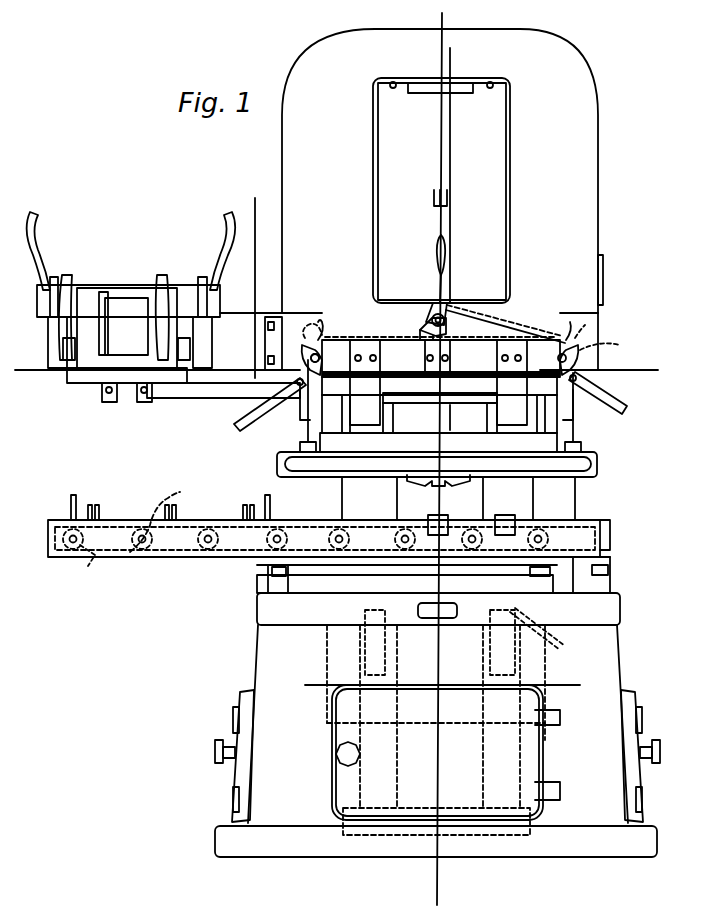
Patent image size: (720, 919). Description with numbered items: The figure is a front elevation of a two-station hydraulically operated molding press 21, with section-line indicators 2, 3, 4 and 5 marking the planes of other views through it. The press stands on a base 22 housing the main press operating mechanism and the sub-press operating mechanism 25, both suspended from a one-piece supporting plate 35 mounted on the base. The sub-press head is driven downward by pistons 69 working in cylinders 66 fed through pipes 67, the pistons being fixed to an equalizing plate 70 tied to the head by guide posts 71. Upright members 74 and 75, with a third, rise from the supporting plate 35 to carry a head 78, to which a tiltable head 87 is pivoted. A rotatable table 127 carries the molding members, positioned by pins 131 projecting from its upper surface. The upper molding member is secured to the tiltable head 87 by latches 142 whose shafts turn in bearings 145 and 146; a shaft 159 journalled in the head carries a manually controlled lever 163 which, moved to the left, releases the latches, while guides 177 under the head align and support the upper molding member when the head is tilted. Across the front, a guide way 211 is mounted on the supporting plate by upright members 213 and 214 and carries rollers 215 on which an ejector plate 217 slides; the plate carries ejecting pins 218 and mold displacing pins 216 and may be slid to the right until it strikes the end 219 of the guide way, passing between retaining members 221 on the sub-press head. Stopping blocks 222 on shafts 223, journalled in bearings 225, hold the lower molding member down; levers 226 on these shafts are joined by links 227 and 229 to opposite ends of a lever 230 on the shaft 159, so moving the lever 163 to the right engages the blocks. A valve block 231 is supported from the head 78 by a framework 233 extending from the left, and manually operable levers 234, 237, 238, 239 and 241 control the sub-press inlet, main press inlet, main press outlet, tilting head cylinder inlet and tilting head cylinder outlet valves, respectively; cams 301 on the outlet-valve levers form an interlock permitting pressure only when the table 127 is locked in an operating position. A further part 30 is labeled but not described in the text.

The section line 2- 2 is at (434, 15).
The section line 3- 3 is at (238, 202).
The section line 4- 4 is at (23, 356).
The section line 5- 5 is at (472, 58).
The two-station hydraulic molding press 21 is at (293, 68).
The base 22 is at (620, 670).
The sub-press operating mechanism 25 is at (318, 660).
The latch bracket 30 is at (434, 193).
The supporting plate 35 is at (613, 608).
The cylinders 66 is at (365, 640).
The pipes 67 is at (560, 648).
The pistons 69 is at (370, 737).
The equalizing plate 70 is at (455, 835).
The guide posts 71 is at (363, 783).
The upright member 74 is at (295, 425).
The upright member 75 is at (578, 420).
The head 78 is at (620, 345).
The tiltable head 87 is at (485, 175).
The table 127 is at (598, 470).
The pins 131 is at (314, 416).
The latches 142 is at (367, 440).
The bearings 145 is at (340, 348).
The bearings 146 is at (398, 350).
The shaft 159 is at (448, 312).
The manually controlled lever 163 is at (447, 252).
The guides 177 is at (280, 397).
The guide way 211 is at (157, 553).
The upright member 213 is at (265, 582).
The upright member 214 is at (605, 580).
The rollers 215 is at (105, 564).
The mold displacing pins 216 is at (78, 497).
The ejector plate 217 is at (174, 510).
The ejecting pins 218 is at (92, 505).
The end 219 is at (605, 525).
The retaining members 221 is at (435, 518).
The stopping blocks 222 is at (245, 423).
The shafts 223 is at (312, 372).
The bearings 225 is at (318, 322).
The levers 226 is at (322, 335).
The link 227 is at (520, 330).
The link 229 is at (426, 318).
The lever 230 is at (433, 314).
The valve block 231 is at (104, 292).
The framework 233 is at (225, 358).
The manually operable lever 234 is at (226, 215).
The manually operable lever 237 is at (70, 278).
The manually operable lever 238 is at (38, 214).
The manually operable lever 239 is at (162, 278).
The manually operable lever 241 is at (95, 345).
The cams 301 is at (55, 277).